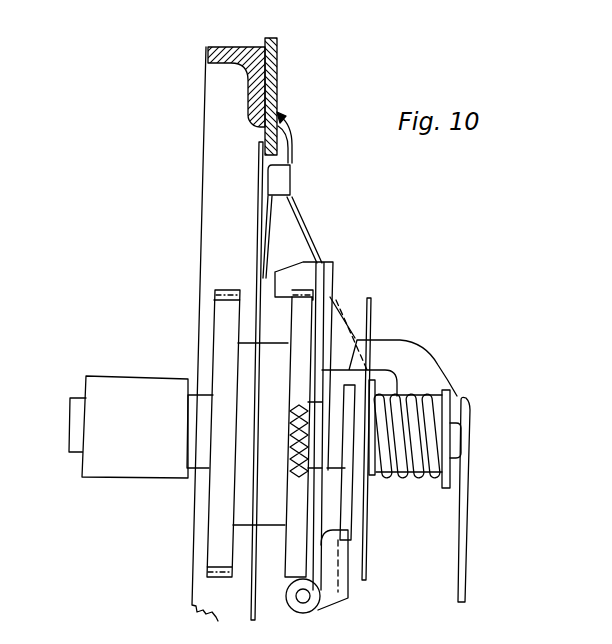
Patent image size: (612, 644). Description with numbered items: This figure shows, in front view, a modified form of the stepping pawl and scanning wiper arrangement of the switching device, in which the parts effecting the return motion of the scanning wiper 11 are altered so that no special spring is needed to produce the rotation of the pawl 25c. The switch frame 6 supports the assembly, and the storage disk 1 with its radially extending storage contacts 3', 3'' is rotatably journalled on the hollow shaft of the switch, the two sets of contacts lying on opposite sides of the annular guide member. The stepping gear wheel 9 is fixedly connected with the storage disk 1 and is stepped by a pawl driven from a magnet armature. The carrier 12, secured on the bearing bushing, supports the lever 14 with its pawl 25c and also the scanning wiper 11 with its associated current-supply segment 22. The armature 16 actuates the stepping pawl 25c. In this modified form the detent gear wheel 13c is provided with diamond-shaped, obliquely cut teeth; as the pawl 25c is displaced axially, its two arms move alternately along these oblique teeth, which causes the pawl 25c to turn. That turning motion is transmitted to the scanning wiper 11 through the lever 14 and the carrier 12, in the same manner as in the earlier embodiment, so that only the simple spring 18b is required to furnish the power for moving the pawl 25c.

The storage disk 1 is at (262, 278).
The storage contacts 3' is at (216, 381).
The storage contacts 3'' is at (309, 153).
The frame 6 is at (223, 47).
The stepping gear wheel 9 is at (223, 323).
The scanning wiper 11 is at (298, 226).
The carrier 12 is at (345, 508).
The detent gear wheel 13c is at (290, 541).
The lever 14 is at (322, 578).
The armature 16 is at (465, 586).
The spring 18b is at (412, 420).
The current-supply segment 22 is at (372, 312).
The pawl 25c is at (403, 353).